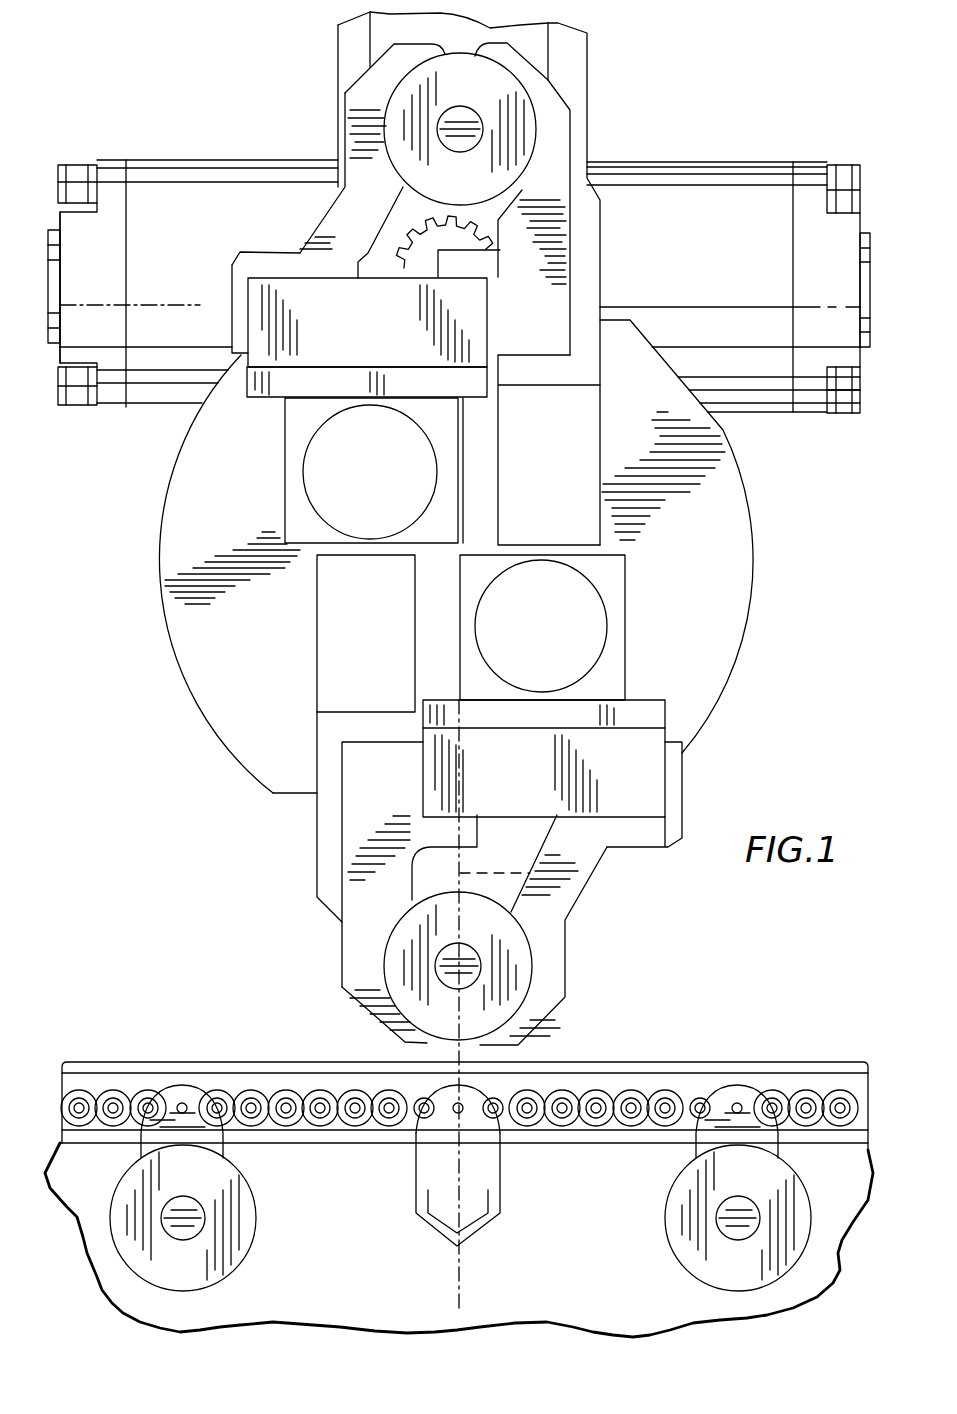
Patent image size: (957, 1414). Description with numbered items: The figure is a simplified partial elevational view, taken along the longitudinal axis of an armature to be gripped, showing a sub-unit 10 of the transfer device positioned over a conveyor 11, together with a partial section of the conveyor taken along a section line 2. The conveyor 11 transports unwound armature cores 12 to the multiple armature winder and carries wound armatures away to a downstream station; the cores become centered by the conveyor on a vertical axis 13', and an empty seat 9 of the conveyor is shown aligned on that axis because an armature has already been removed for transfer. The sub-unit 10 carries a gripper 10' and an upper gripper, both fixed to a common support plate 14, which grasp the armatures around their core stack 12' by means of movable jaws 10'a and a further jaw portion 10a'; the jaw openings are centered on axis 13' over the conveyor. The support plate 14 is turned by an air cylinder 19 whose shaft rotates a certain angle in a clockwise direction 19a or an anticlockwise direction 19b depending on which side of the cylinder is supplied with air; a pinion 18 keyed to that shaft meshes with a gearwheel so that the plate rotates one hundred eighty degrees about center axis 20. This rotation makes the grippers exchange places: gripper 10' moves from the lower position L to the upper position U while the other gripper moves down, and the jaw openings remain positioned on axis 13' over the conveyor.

The upper position U is at (595, 68).
The air cylinder 19 is at (717, 190).
The clockwise direction 19a is at (148, 415).
The anticlockwise direction 19b is at (165, 778).
The pinion 18 is at (467, 238).
The center axis 20 is at (467, 543).
The support plate 14 is at (720, 498).
The sub-unit 10 is at (578, 927).
The movable jaws 10'a is at (338, 864).
The lower clamp block 10a' is at (589, 773).
The vertical axis 13' is at (551, 930).
The gripper 10' is at (371, 877).
The lower position L is at (573, 983).
The conveyor 11 is at (687, 1047).
The section line 2 is at (870, 45).
The armature cores 12 is at (460, 1218).
The core stack 12' is at (240, 1204).
The seat 9 is at (492, 1218).